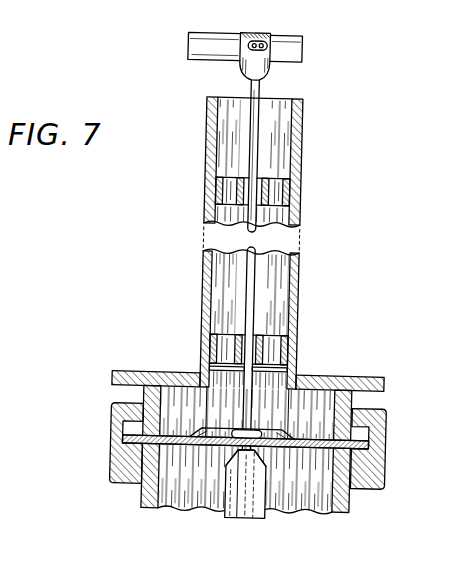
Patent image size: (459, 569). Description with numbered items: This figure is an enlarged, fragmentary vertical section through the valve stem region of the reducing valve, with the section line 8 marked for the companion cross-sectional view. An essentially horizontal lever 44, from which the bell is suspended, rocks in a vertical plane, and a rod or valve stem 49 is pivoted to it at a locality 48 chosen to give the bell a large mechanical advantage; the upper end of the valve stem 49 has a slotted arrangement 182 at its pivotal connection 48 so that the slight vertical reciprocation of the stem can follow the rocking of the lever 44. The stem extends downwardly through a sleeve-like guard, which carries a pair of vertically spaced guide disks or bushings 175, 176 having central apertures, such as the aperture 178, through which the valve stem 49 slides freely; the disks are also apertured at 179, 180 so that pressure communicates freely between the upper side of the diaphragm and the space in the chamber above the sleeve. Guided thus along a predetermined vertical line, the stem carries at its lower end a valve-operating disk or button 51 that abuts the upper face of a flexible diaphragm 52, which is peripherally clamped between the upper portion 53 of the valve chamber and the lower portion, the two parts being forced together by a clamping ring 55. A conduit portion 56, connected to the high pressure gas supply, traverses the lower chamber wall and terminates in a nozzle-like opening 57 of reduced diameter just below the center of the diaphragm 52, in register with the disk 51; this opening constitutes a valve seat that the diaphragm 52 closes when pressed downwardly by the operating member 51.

The lever 44 is at (190, 46).
The pivotal connection 48 is at (243, 32).
The slotted arrangement 182 is at (262, 43).
The valve stem 49 is at (254, 88).
The upper guide disk 175 is at (297, 197).
The aperture in upper guide disk 179 is at (218, 196).
The aperture in lower guide disk 180 is at (212, 349).
The lower guide disk 176 is at (284, 348).
The central aperture 178 is at (289, 369).
The flexible diaphragm 52 is at (369, 376).
The upper portion of valve chamber 53 is at (354, 401).
The clamping ring 55 is at (373, 467).
The valve-operating disk 51 is at (253, 430).
The nozzle-like opening 57 is at (268, 462).
The conduit portion 56 is at (266, 492).
The section line 8- 8 is at (166, 272).